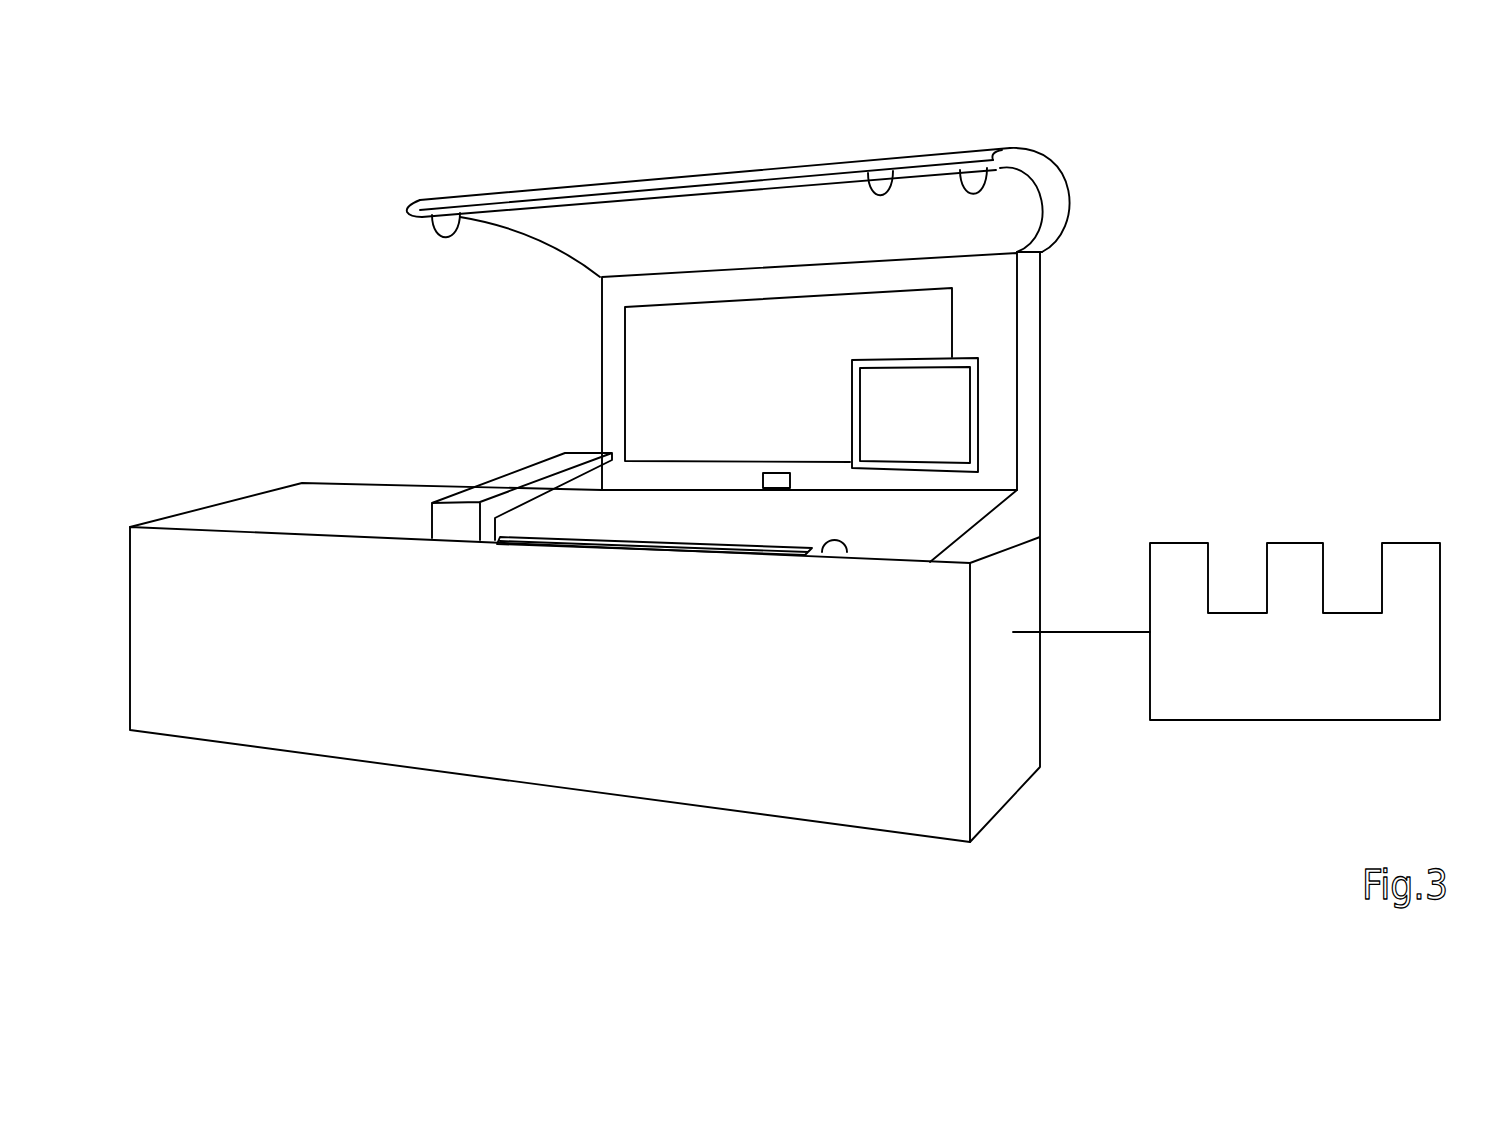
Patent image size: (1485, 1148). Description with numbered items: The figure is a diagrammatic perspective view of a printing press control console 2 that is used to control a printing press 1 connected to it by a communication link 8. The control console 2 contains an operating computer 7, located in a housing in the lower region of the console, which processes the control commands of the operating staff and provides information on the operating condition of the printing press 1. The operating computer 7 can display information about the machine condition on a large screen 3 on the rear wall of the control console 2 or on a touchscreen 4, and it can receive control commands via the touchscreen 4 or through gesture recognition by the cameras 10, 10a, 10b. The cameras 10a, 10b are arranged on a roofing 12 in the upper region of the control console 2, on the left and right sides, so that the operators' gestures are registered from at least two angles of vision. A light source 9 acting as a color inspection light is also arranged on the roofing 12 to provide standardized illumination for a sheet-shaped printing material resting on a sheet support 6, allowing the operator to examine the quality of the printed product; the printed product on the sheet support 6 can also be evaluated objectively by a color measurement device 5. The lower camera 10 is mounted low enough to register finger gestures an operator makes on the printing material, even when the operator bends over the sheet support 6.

The printing press 1 is at (1320, 698).
The control console 2 is at (1175, 297).
The large screen 3 is at (657, 330).
The touchscreen 4 is at (952, 418).
The color measurement device 5 is at (508, 478).
The sheet support 6 is at (940, 515).
The operating computer 7 is at (367, 740).
The communication link 8 is at (1088, 638).
The light source 9 is at (870, 182).
The lower camera 10 is at (773, 475).
The camera 10a is at (444, 228).
The camera 10b is at (978, 180).
The roofing 12 is at (680, 177).